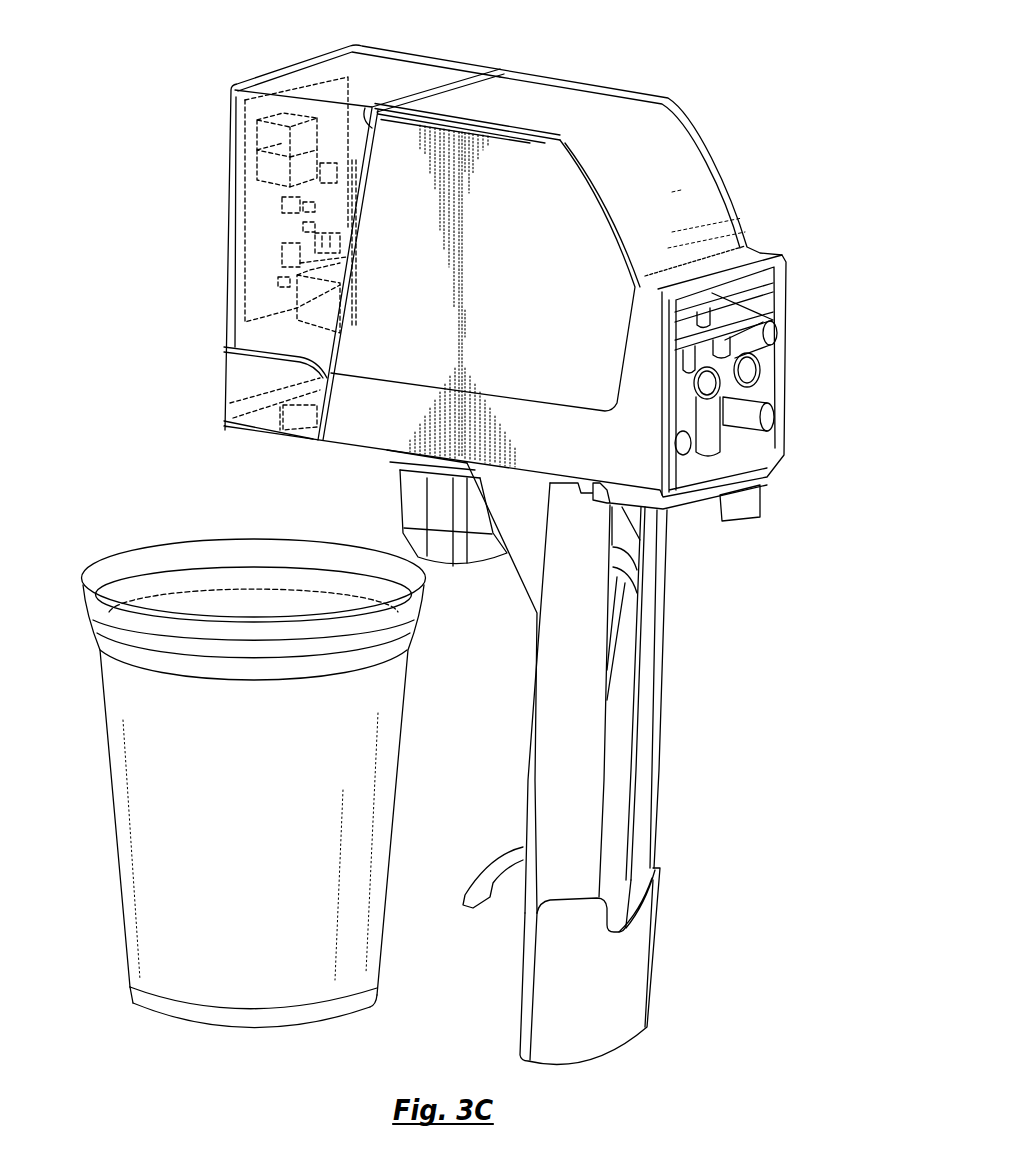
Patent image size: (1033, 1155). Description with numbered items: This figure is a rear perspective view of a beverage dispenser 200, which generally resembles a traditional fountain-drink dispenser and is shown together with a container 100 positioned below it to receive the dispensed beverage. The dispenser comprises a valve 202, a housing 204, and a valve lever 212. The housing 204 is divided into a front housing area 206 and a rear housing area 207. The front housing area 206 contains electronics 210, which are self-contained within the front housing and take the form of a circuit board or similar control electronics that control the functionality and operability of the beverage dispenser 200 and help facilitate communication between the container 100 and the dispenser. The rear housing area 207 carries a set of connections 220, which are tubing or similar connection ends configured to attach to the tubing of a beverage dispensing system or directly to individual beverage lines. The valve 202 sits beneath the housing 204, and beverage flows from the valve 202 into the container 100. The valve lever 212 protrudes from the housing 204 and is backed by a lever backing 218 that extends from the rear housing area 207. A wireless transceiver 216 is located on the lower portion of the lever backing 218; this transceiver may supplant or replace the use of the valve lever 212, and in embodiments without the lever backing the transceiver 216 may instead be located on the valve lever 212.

The container 100 is at (177, 937).
The beverage dispenser 200 is at (725, 122).
The valve 202 is at (448, 507).
The housing 204 is at (607, 105).
The front housing area 206 is at (383, 78).
The rear housing area 207 is at (465, 295).
The electronics 210 is at (313, 185).
The valve lever 212 is at (622, 578).
The wireless transceiver 216 is at (590, 972).
The lever backing 218 is at (575, 787).
The connections 220 is at (717, 377).